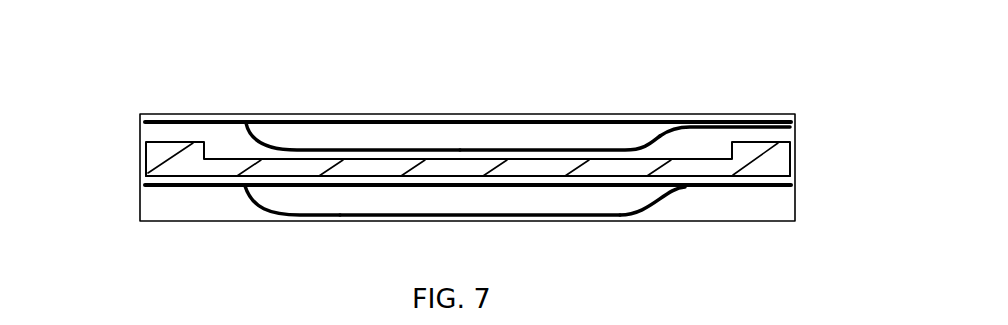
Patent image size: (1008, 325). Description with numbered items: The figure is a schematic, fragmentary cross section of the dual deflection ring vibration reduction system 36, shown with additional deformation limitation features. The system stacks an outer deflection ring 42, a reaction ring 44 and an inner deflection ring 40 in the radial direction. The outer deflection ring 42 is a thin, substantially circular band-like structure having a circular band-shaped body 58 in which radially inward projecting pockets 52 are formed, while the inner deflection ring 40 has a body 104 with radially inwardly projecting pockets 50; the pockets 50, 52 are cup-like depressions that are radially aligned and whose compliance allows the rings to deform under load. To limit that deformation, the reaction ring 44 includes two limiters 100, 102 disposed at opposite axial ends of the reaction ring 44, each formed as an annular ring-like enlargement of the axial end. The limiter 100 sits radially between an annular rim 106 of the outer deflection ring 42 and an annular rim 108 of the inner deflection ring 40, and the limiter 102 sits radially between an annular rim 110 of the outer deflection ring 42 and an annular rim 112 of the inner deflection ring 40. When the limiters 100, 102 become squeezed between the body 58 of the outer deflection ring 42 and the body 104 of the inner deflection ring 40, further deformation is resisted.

The sensor assembly 36 is at (121, 162).
The inner deflection ring 40 is at (282, 212).
The outer deflection ring 42 is at (657, 147).
The reaction ring 44 is at (717, 170).
The pockets 50 is at (383, 212).
The pockets 52 is at (317, 148).
The body 58 is at (668, 132).
The limiter 100 is at (162, 158).
The limiter 102 is at (780, 157).
The body 104 is at (657, 207).
The annular rim 106 is at (177, 121).
The annular rim 108 is at (168, 187).
The annular rim 110 is at (783, 120).
The annular rim 112 is at (785, 188).